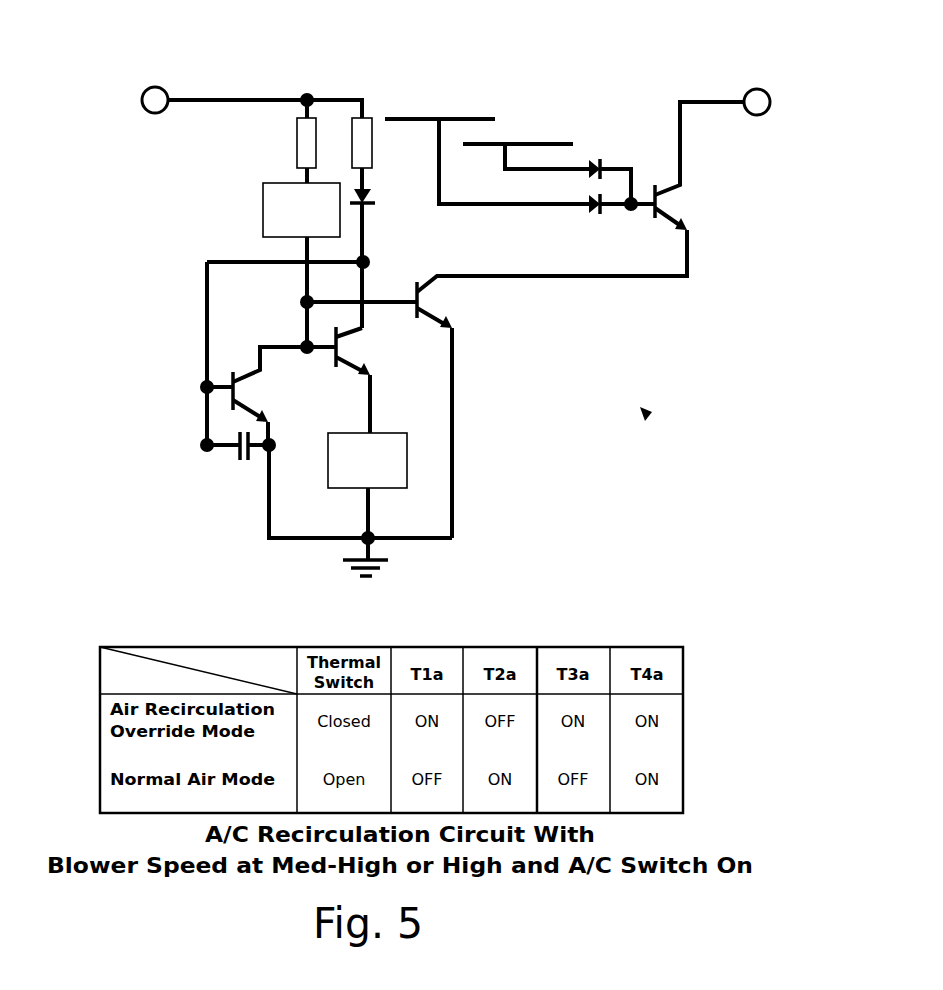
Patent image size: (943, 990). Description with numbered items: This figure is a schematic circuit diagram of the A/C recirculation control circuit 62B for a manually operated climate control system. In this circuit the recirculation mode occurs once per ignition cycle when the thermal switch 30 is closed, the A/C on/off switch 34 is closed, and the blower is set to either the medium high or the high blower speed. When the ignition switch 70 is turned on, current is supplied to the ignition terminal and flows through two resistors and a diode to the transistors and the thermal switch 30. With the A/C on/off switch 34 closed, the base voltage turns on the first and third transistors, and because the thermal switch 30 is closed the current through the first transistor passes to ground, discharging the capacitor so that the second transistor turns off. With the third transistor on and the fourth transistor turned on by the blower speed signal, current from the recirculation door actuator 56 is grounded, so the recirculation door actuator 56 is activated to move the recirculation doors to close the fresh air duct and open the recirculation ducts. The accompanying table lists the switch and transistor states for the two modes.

The ignition switch 70 is at (168, 91).
The recirculation door actuator 56 is at (750, 87).
The A/C on/off switch 34 is at (263, 213).
The thermal switch 30 is at (387, 433).
The A/C recirculation control circuit 62B is at (469, 316).